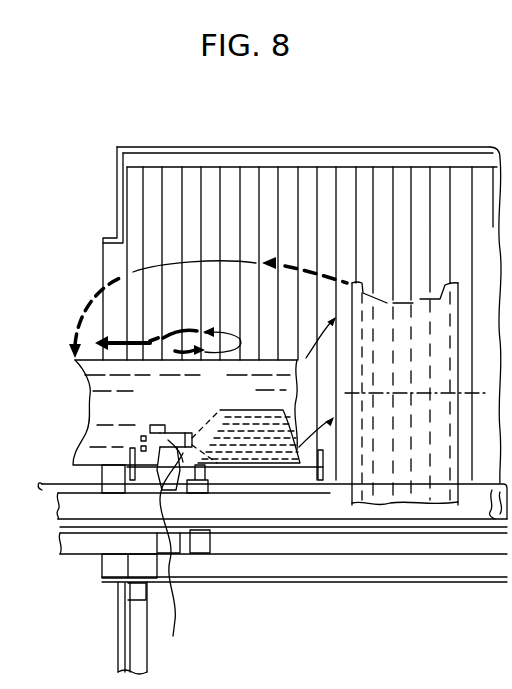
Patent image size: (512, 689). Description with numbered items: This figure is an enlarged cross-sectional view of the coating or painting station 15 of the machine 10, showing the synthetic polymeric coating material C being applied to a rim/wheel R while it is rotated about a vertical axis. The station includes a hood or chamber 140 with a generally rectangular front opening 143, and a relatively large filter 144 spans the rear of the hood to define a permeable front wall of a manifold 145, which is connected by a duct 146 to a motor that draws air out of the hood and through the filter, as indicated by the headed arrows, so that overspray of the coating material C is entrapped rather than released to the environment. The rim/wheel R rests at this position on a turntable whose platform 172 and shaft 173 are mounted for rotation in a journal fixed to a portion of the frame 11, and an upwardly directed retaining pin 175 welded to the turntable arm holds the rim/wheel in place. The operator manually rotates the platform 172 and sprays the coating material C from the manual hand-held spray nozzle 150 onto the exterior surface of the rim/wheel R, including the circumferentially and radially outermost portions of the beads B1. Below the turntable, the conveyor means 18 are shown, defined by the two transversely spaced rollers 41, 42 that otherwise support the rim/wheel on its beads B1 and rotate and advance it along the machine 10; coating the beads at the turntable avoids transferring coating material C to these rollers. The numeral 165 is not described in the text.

The machine 10 is at (280, 295).
The frame 11 is at (329, 589).
The coating station 15 is at (235, 145).
The conveyor means 18 is at (34, 477).
The roller 41 is at (50, 501).
The roller 42 is at (60, 537).
The hood 140 is at (476, 160).
The front opening 143 is at (112, 257).
The filter 144 is at (308, 180).
The manifold 145 is at (0, 180).
The duct 146 is at (8, 65).
The spray nozzle 150 is at (165, 424).
The hose 165 is at (171, 615).
The platform 172 is at (143, 472).
The shaft 173 is at (270, 473).
The retaining pin 175 is at (340, 452).
The beads B1 is at (78, 366).
The rim/wheel R is at (152, 409).
The coating material C is at (251, 418).